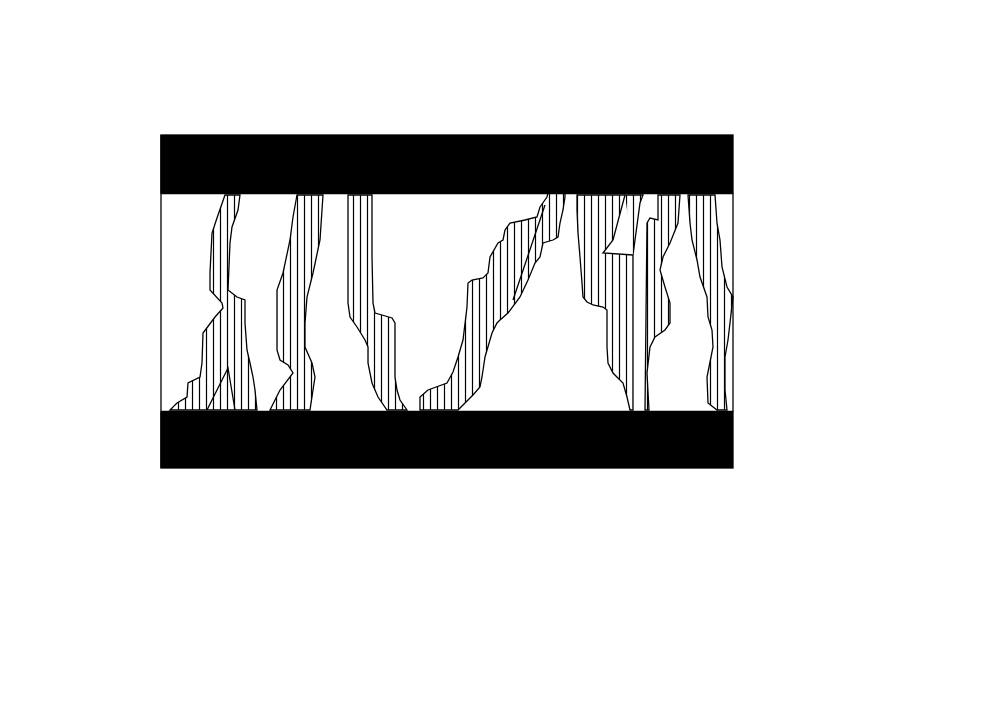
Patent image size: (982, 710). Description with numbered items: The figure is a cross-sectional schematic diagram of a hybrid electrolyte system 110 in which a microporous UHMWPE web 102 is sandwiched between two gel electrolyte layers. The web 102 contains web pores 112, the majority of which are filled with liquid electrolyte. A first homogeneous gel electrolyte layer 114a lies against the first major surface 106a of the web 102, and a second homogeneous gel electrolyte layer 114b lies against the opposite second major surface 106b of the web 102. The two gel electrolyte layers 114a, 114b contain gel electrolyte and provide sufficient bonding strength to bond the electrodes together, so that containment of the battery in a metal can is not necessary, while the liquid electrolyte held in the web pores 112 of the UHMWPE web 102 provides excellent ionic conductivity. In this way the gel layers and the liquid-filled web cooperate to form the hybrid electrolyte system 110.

The hybrid electrolyte system 110 is at (162, 524).
The web pores 112 is at (573, 135).
The UHMWPE web 102 is at (537, 363).
The first homogeneous gel electrolyte layer 114a is at (159, 183).
The second homogeneous gel electrolyte layer 114b is at (161, 438).
The first major surface 106a is at (730, 193).
The second major surface 106b is at (733, 408).